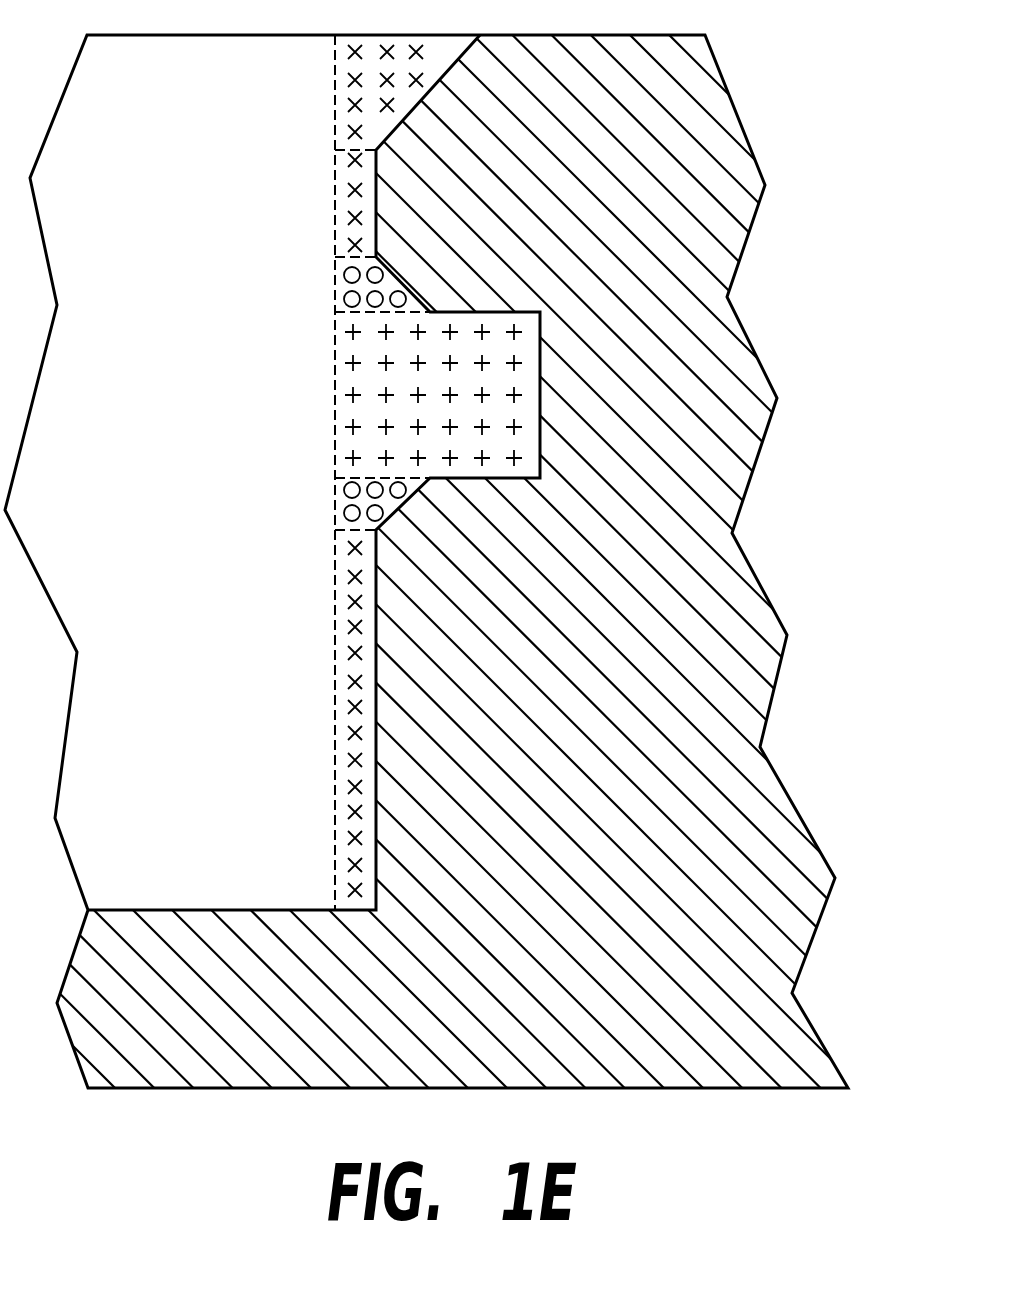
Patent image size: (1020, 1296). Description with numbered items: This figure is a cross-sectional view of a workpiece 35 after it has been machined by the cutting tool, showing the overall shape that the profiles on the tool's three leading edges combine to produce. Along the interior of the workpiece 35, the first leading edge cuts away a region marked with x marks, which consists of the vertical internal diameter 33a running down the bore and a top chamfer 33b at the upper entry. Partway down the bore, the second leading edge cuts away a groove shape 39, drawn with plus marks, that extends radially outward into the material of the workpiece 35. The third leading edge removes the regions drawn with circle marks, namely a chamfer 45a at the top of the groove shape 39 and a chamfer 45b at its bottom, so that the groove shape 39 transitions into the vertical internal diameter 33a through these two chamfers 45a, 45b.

The substrate body 35 is at (772, 378).
The vertical internal diameter 33a is at (375, 203).
The top chamfer 33b is at (427, 93).
The groove shape 39 is at (538, 402).
The chamfer 45a is at (398, 288).
The chamfer 45b is at (417, 498).